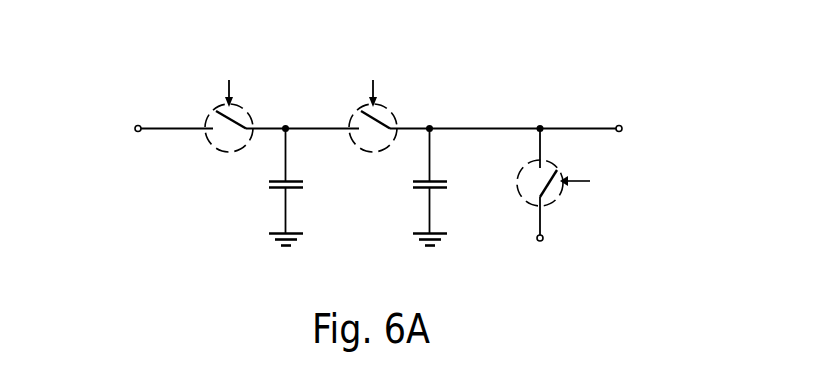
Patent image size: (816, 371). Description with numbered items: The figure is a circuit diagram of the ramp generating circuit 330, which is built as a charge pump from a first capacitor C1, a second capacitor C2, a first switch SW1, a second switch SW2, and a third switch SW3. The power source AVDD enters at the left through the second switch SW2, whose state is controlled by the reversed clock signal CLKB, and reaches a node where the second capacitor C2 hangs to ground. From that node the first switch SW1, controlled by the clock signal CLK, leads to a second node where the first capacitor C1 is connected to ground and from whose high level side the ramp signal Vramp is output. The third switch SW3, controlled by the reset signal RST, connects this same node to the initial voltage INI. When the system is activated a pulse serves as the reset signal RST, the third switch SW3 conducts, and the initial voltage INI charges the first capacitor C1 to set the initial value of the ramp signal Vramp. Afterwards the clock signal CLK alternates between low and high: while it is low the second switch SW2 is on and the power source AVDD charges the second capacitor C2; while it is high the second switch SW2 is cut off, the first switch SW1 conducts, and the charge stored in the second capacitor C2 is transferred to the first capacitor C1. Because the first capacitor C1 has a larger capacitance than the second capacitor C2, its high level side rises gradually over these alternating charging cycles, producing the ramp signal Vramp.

The ramp generating circuit 330 is at (503, 67).
The first switch SW1 is at (388, 110).
The second switch SW2 is at (213, 146).
The third switch SW3 is at (556, 203).
The first capacitor C1 is at (446, 187).
The second capacitor C2 is at (304, 187).
The clock signal CLK is at (374, 75).
The reversed clock signal CLKB is at (229, 74).
The reset signal RST is at (601, 179).
The power source AVDD is at (135, 129).
The ramp signal Vramp is at (618, 129).
The initial voltage INI is at (542, 259).